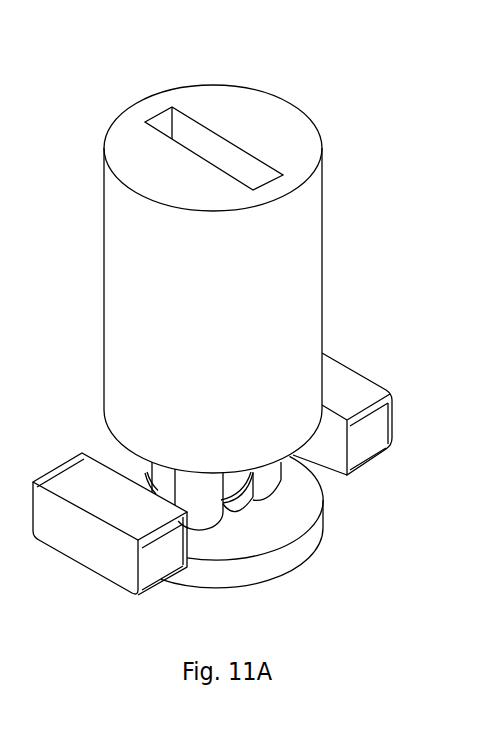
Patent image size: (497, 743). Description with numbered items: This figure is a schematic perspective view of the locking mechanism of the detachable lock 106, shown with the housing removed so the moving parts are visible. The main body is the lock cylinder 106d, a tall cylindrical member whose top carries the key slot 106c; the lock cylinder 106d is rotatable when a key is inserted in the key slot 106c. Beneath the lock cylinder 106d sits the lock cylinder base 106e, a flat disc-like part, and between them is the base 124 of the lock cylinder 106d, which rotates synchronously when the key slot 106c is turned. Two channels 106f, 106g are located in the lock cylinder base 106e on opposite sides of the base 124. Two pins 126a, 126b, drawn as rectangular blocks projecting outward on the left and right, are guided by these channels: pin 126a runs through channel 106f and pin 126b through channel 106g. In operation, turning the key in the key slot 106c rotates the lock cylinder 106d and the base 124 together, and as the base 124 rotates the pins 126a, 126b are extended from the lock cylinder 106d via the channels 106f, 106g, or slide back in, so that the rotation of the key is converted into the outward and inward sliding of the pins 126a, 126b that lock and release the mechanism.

The detachable lock 106 is at (218, 323).
The key slot 106c is at (187, 128).
The lock cylinder 106d is at (287, 128).
The lock cylinder base 106e is at (288, 520).
The channel 106f is at (167, 490).
The channel 106g is at (253, 497).
The base 124 is at (212, 513).
The pin 126a is at (95, 538).
The pin 126b is at (345, 393).